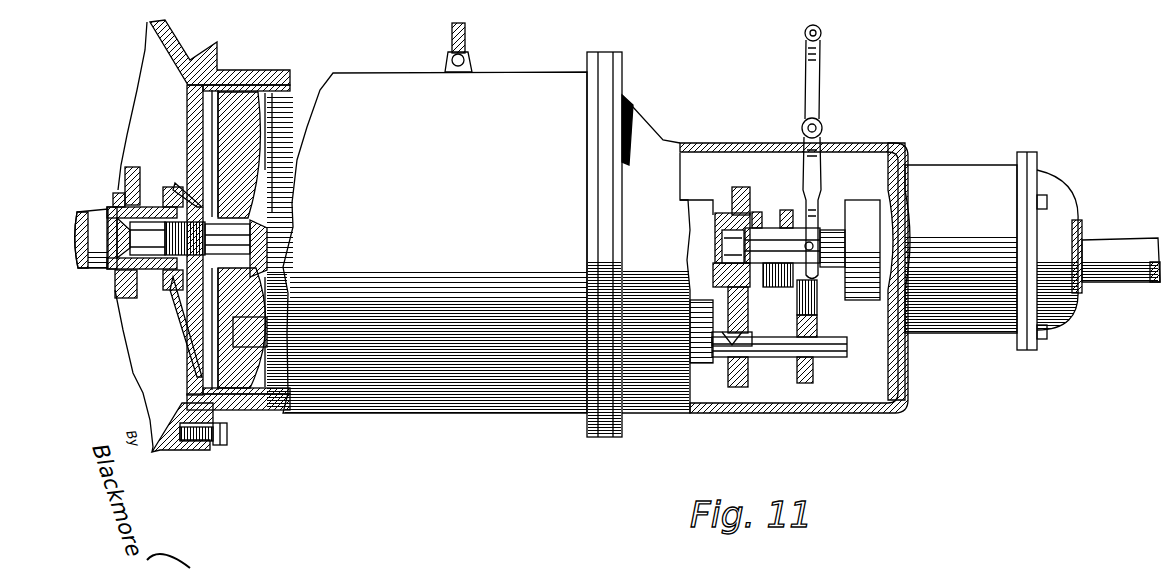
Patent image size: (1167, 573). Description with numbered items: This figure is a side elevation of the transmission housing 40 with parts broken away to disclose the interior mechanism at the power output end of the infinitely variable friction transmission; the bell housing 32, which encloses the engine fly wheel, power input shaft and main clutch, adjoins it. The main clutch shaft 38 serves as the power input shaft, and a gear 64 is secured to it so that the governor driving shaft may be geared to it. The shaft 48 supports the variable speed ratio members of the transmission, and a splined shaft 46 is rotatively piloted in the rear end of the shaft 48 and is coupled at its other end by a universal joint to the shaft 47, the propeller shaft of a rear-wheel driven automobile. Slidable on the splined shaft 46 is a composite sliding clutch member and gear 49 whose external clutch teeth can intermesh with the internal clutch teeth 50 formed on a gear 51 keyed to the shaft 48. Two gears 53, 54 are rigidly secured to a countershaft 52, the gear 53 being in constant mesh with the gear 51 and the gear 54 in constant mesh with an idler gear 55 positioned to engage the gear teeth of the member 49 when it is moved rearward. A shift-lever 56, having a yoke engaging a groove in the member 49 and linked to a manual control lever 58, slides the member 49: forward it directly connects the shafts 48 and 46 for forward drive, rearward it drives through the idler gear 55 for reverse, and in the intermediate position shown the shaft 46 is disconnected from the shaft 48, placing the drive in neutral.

The bell housing 32 is at (160, 447).
The main clutch shaft 38 is at (95, 213).
The transmission housing 40 is at (443, 405).
The shaft 46 is at (833, 227).
The shaft 47 is at (1123, 270).
The shaft 48 is at (247, 242).
The composite sliding clutch member and gear 49 is at (773, 213).
The internal clutch teeth 50 is at (757, 212).
The gear 51 is at (737, 187).
The countershaft 52 is at (777, 357).
The gear 53 is at (740, 387).
The gear 54 is at (813, 377).
The idler gear 55 is at (808, 302).
The shift-lever 56 is at (813, 110).
The manual control lever 58 is at (460, 43).
The gear 64 is at (133, 173).